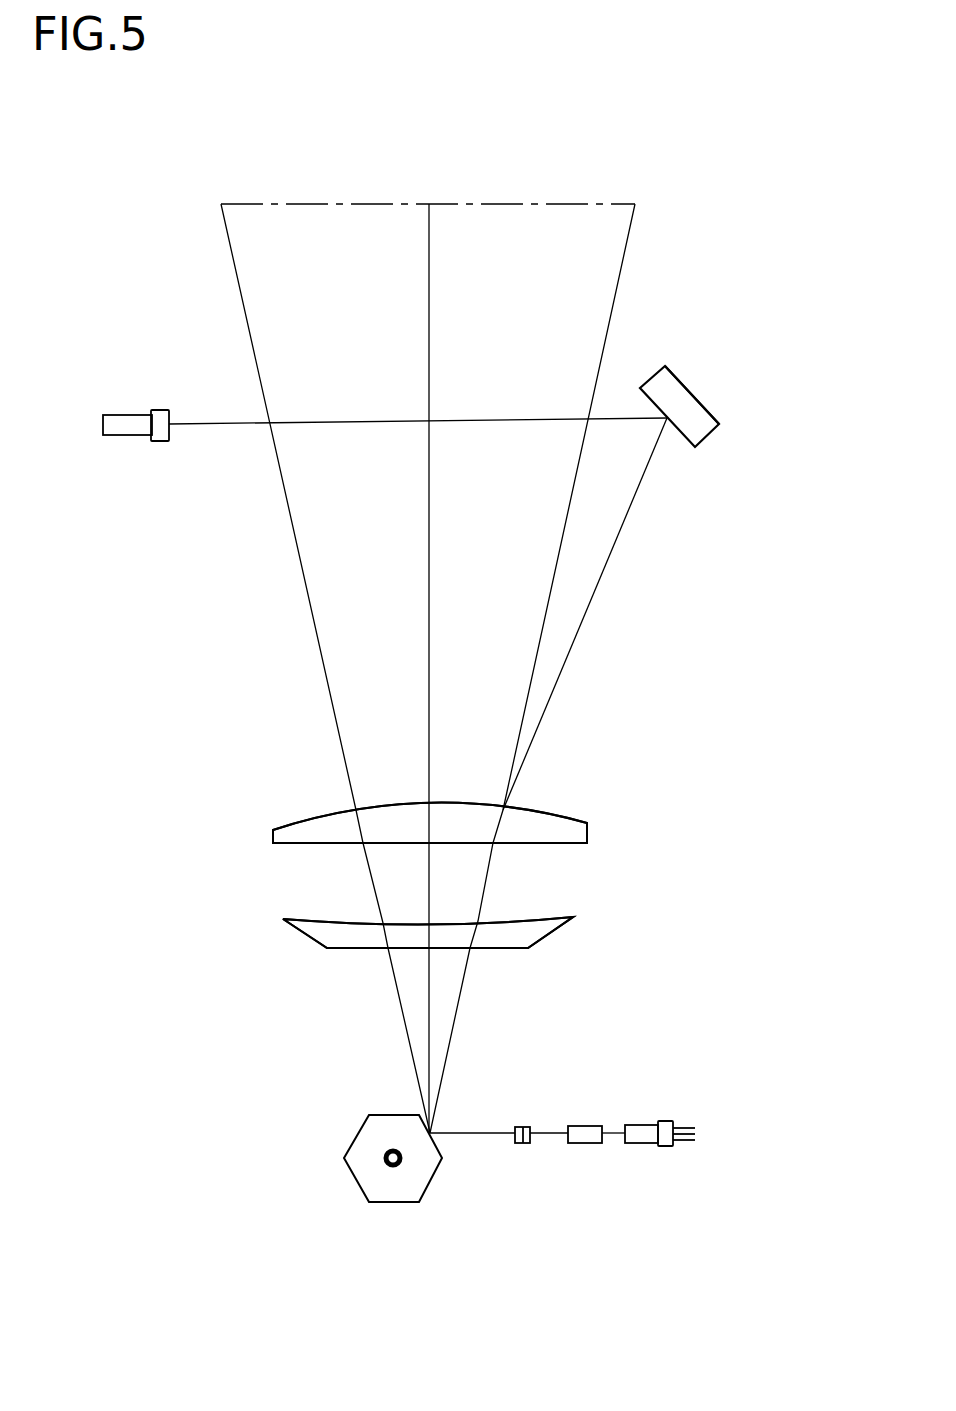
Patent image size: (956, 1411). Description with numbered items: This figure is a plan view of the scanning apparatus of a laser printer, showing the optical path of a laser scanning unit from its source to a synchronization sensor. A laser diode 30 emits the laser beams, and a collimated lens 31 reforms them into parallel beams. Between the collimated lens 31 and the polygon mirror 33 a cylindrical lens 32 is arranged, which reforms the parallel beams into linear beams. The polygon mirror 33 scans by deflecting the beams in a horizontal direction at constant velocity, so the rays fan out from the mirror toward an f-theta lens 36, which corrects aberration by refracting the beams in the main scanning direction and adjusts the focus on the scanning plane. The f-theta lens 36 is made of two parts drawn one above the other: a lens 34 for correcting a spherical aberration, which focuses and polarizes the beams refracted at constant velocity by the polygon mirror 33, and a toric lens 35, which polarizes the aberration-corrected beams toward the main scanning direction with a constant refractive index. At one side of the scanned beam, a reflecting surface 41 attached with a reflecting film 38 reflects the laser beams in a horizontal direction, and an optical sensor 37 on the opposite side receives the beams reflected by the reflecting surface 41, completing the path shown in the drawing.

The laser diode 30 is at (642, 1145).
The collimated lens 31 is at (585, 1145).
The cylindrical lens 32 is at (525, 1145).
The polygon mirror 33 is at (395, 1203).
The lens for correcting a spherical aberration 34 is at (573, 922).
The toric lens 35 is at (587, 830).
The f-theta lens 36 is at (667, 830).
The optical sensor 37 is at (126, 437).
The reflecting film 38 is at (685, 446).
The reflecting surface 41 is at (697, 399).